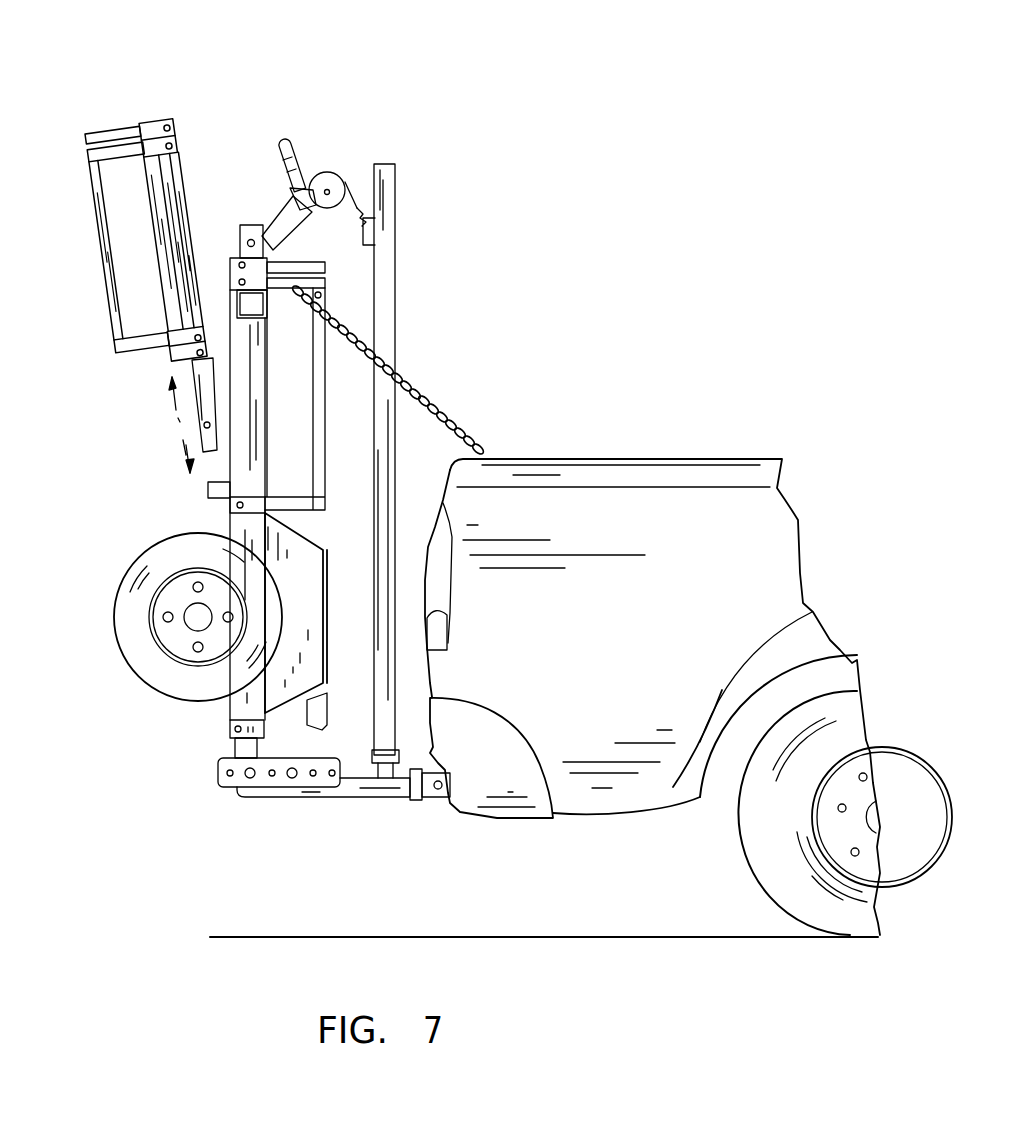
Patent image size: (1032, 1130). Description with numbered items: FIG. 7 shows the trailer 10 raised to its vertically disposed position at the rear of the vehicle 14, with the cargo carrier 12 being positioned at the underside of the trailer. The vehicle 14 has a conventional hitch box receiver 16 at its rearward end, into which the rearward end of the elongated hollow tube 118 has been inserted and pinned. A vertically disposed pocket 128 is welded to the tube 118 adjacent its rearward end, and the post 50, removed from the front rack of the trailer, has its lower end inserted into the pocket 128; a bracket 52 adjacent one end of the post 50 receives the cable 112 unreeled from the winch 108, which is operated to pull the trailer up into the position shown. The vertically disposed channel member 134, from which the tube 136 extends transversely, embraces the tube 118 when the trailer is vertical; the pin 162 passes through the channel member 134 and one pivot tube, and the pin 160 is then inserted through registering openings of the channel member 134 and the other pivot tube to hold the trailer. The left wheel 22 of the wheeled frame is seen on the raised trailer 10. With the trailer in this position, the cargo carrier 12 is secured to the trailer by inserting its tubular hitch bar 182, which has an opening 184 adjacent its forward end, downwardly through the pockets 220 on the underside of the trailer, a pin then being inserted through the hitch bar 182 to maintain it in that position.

The trailer 10 is at (345, 432).
The cargo carrier 12 is at (205, 185).
The vehicle 14 is at (635, 452).
The hitch box receiver 16 is at (437, 800).
The left wheel 22 is at (141, 663).
The post 50 is at (395, 292).
The bracket 52 is at (388, 218).
The winch 108 is at (320, 178).
The cable 112 is at (343, 183).
The tube 118 is at (358, 800).
The pocket 128 is at (397, 752).
The channel member 134 is at (217, 777).
The tube 136 is at (228, 748).
The pin 160 is at (293, 775).
The pin 162 is at (218, 766).
The hitch bar 182 is at (203, 426).
The opening 184 is at (205, 428).
The pocket 220 is at (213, 497).